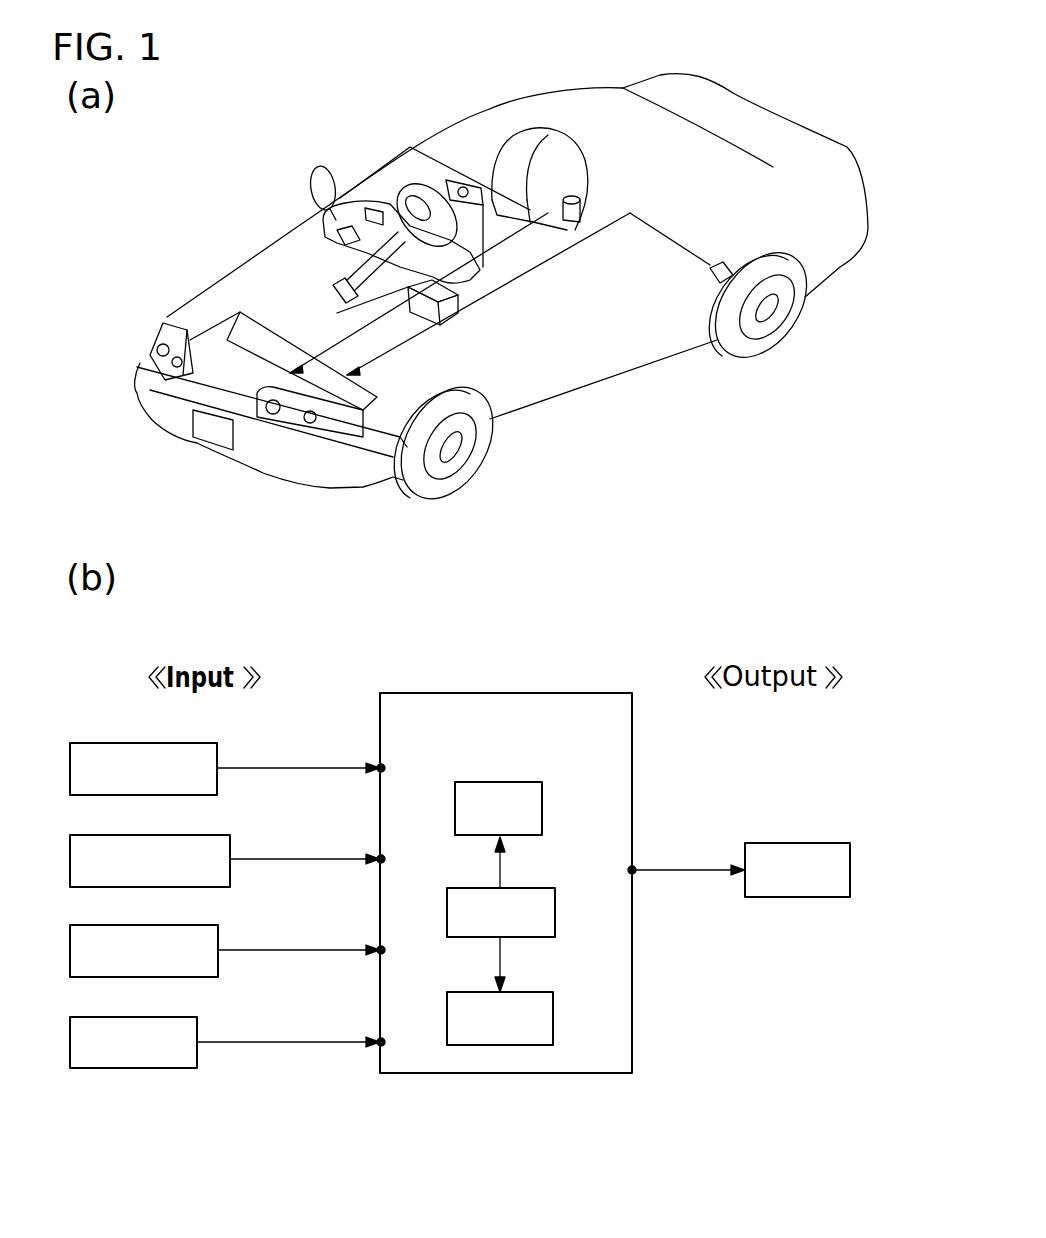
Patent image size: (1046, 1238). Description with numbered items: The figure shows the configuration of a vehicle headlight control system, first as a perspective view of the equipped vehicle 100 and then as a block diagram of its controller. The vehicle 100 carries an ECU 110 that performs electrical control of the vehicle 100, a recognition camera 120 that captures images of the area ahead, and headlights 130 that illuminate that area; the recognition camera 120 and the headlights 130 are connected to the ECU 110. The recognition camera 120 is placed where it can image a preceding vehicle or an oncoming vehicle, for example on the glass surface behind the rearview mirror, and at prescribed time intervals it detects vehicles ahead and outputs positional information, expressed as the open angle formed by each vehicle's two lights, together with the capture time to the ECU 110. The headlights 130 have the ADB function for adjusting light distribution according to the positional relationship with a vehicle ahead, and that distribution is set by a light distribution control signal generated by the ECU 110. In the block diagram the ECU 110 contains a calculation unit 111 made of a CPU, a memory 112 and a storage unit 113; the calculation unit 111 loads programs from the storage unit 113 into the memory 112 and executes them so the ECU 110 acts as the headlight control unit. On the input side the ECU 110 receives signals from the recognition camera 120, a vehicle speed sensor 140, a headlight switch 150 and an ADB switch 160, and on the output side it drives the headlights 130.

The vehicle 100 is at (742, 88).
The ECU 110 is at (443, 326).
The calculation unit 111 is at (528, 888).
The memory 112 is at (523, 782).
The storage unit 113 is at (527, 992).
The recognition camera 120 is at (463, 190).
The headlights 130 is at (150, 338).
The vehicle speed sensor 140 is at (231, 835).
The headlight switch 150 is at (220, 925).
The ADB switch 160 is at (199, 1017).